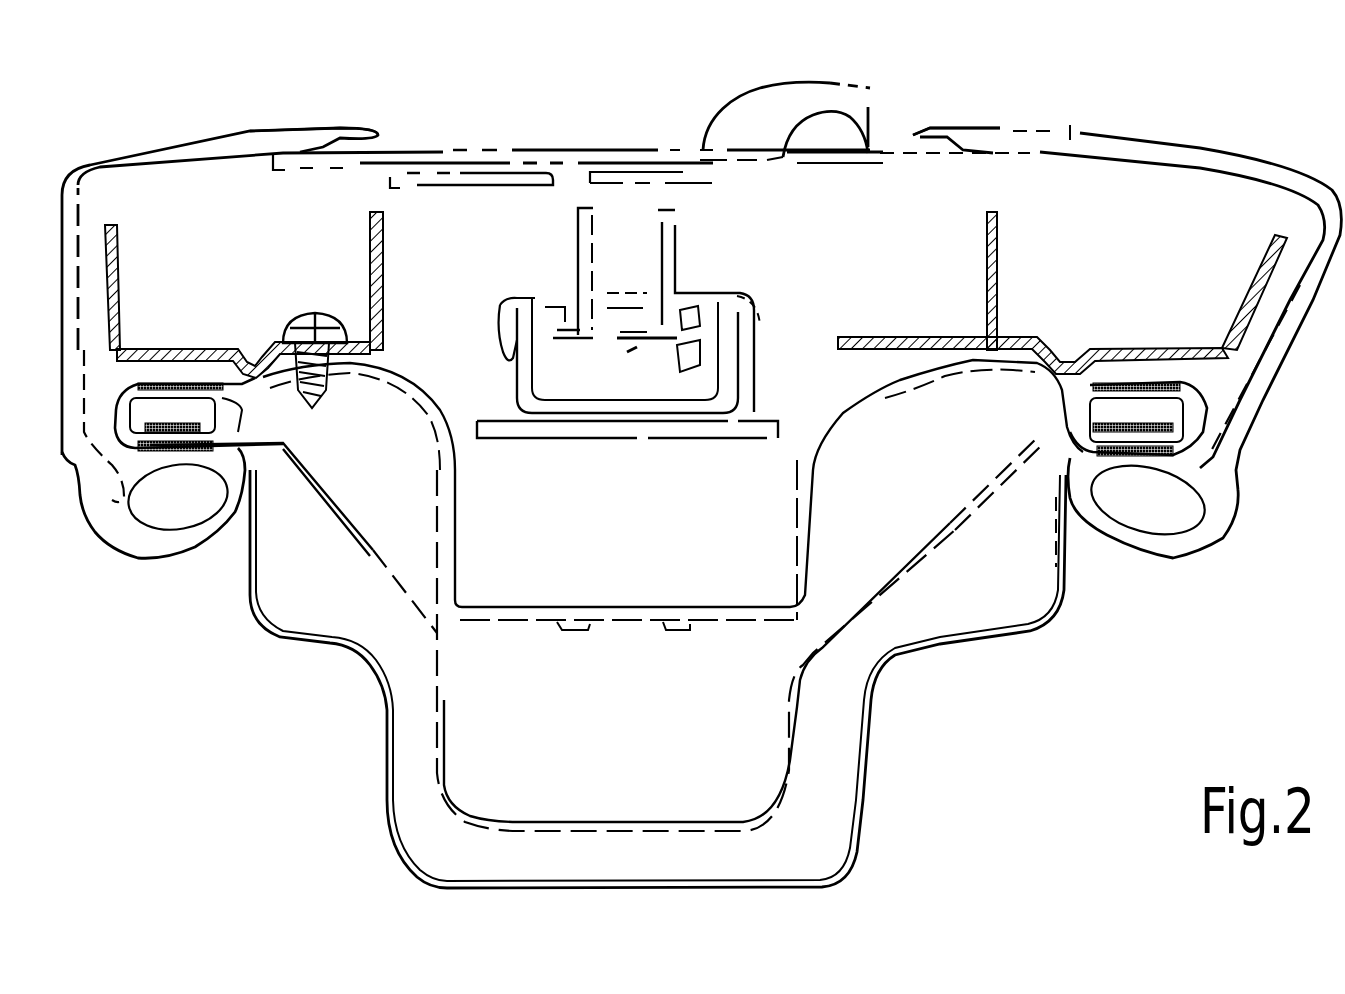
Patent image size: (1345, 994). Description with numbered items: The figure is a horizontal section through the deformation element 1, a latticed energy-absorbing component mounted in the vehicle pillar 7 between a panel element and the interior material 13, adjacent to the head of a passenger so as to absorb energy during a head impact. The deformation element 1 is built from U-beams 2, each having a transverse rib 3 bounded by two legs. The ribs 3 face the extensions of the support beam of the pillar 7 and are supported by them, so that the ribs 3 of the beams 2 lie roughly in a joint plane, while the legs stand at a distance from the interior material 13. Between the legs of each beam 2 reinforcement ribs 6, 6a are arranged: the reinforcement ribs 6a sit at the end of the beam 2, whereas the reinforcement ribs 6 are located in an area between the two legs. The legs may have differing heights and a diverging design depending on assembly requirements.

The deformation element 1 is at (882, 283).
The U-beam 2 is at (387, 305).
The transverse rib 3 is at (190, 345).
The reinforcement rib 6 is at (997, 253).
The reinforcement rib 6a is at (117, 265).
The pillar 7 is at (812, 530).
The interior material 13 is at (1070, 128).